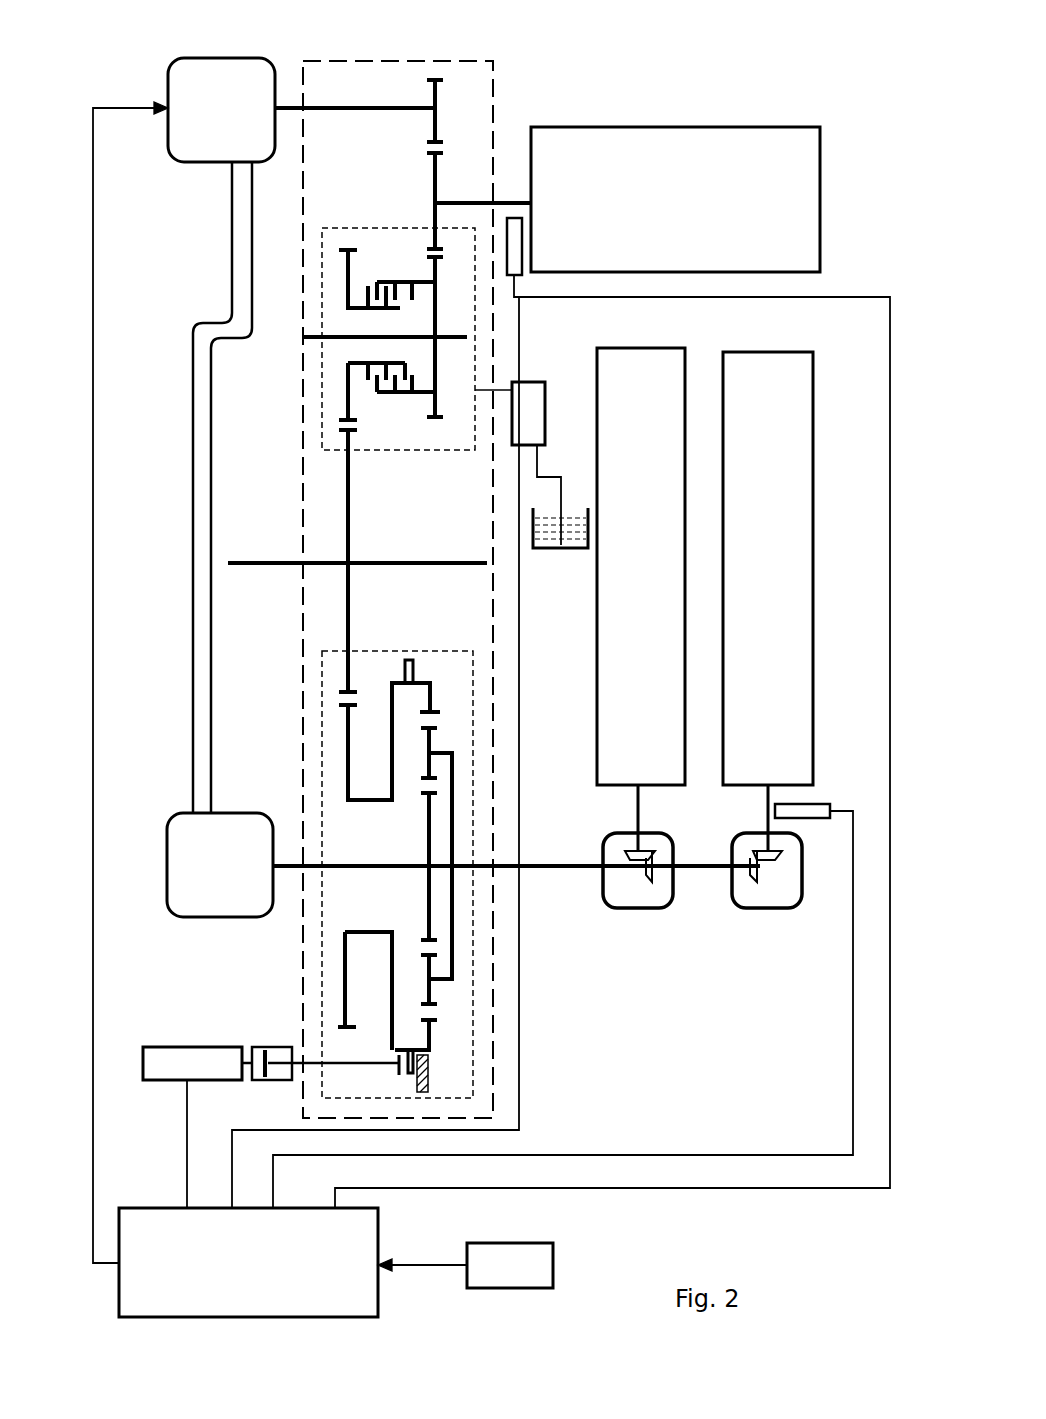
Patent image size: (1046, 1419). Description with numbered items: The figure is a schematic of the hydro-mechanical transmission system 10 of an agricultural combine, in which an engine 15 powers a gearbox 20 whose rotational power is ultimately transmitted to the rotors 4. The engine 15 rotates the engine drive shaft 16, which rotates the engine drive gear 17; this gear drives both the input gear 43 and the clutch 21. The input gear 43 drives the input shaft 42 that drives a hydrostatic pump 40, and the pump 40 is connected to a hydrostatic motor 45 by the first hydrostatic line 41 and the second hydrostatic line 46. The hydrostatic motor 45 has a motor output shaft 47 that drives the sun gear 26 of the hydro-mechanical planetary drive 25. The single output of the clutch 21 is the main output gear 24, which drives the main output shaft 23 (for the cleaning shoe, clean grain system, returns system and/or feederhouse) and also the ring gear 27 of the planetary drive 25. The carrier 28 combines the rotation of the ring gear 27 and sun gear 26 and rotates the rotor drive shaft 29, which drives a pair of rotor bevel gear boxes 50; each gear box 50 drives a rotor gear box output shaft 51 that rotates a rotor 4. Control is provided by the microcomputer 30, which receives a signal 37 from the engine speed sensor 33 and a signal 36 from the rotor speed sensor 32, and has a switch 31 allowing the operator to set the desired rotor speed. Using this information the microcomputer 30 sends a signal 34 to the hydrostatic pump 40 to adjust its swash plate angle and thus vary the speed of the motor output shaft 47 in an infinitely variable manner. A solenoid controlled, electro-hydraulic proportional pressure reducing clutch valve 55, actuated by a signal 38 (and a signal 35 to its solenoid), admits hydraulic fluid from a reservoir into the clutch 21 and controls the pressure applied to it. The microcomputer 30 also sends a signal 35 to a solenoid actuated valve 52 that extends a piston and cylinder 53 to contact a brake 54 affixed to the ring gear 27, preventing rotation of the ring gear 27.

The hybrid drive system 10 is at (150, 62).
The hydrostatic pump 40 is at (212, 58).
The signal 34 is at (93, 204).
The input shaft 42 is at (333, 107).
The input gear 43 is at (440, 95).
The gearbox 20 is at (496, 76).
The engine drive gear 17 is at (430, 182).
The engine drive shaft 16 is at (500, 203).
The engine 15 is at (694, 140).
The engine speed sensor 33 is at (516, 244).
The signal 37 is at (680, 1190).
The signal 38 is at (250, 1130).
The signal 36 is at (762, 1155).
The signal 35 is at (187, 1145).
The rotor 4 is at (655, 395).
The clutch 21 is at (437, 297).
The clutch valve 55 is at (527, 397).
The main output gear 24 is at (347, 500).
The main output shaft 23 is at (282, 562).
The hydro-mechanical planetary drive 25 is at (322, 939).
The ring gear 27 is at (432, 700).
The carrier 28 is at (452, 773).
The sun gear 26 is at (429, 843).
The brake 54 is at (433, 1074).
The piston and cylinder 53 is at (262, 1047).
The solenoid actuated valve 52 is at (170, 1050).
The first hydrostatic line 41 is at (252, 235).
The second hydrostatic line 46 is at (232, 270).
The hydrostatic motor 45 is at (178, 816).
The motor output shaft 47 is at (293, 862).
The rotor drive shaft 29 is at (550, 870).
The rotor gear box output shaft 51 is at (768, 800).
The rotor bevel gear box 50 is at (672, 900).
The rotor speed sensor 32 is at (806, 810).
The microcomputer 30 is at (165, 1290).
The switch 31 is at (505, 1288).